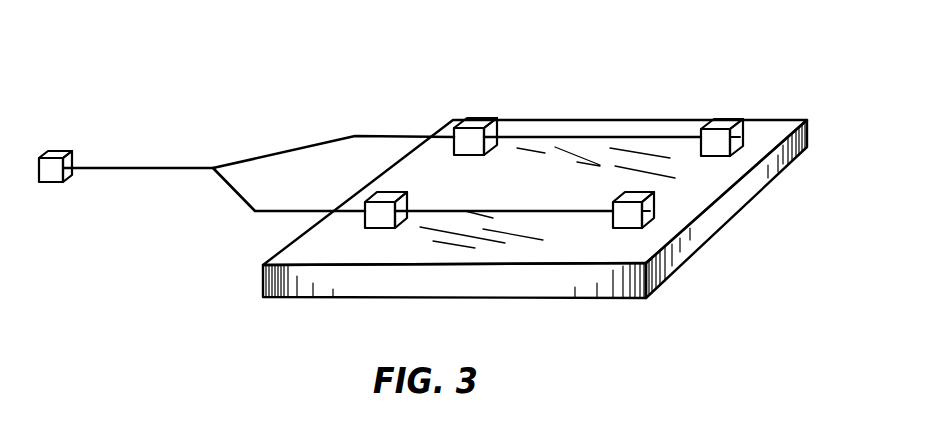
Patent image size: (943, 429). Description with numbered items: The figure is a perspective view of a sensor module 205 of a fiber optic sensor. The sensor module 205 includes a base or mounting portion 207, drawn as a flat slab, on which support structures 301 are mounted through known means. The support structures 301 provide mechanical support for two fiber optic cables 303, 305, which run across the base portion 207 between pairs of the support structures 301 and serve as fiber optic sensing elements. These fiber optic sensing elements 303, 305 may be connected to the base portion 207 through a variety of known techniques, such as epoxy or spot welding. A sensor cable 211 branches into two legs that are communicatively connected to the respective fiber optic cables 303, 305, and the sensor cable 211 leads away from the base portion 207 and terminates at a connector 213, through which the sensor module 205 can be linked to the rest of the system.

The sensor module 205 is at (545, 176).
The base portion 207 is at (698, 248).
The sensor cable 211 is at (285, 151).
The connector 213 is at (62, 152).
The support structures 301 is at (479, 118).
The fiber optic cable 303 is at (583, 136).
The fiber optic cable 305 is at (503, 210).